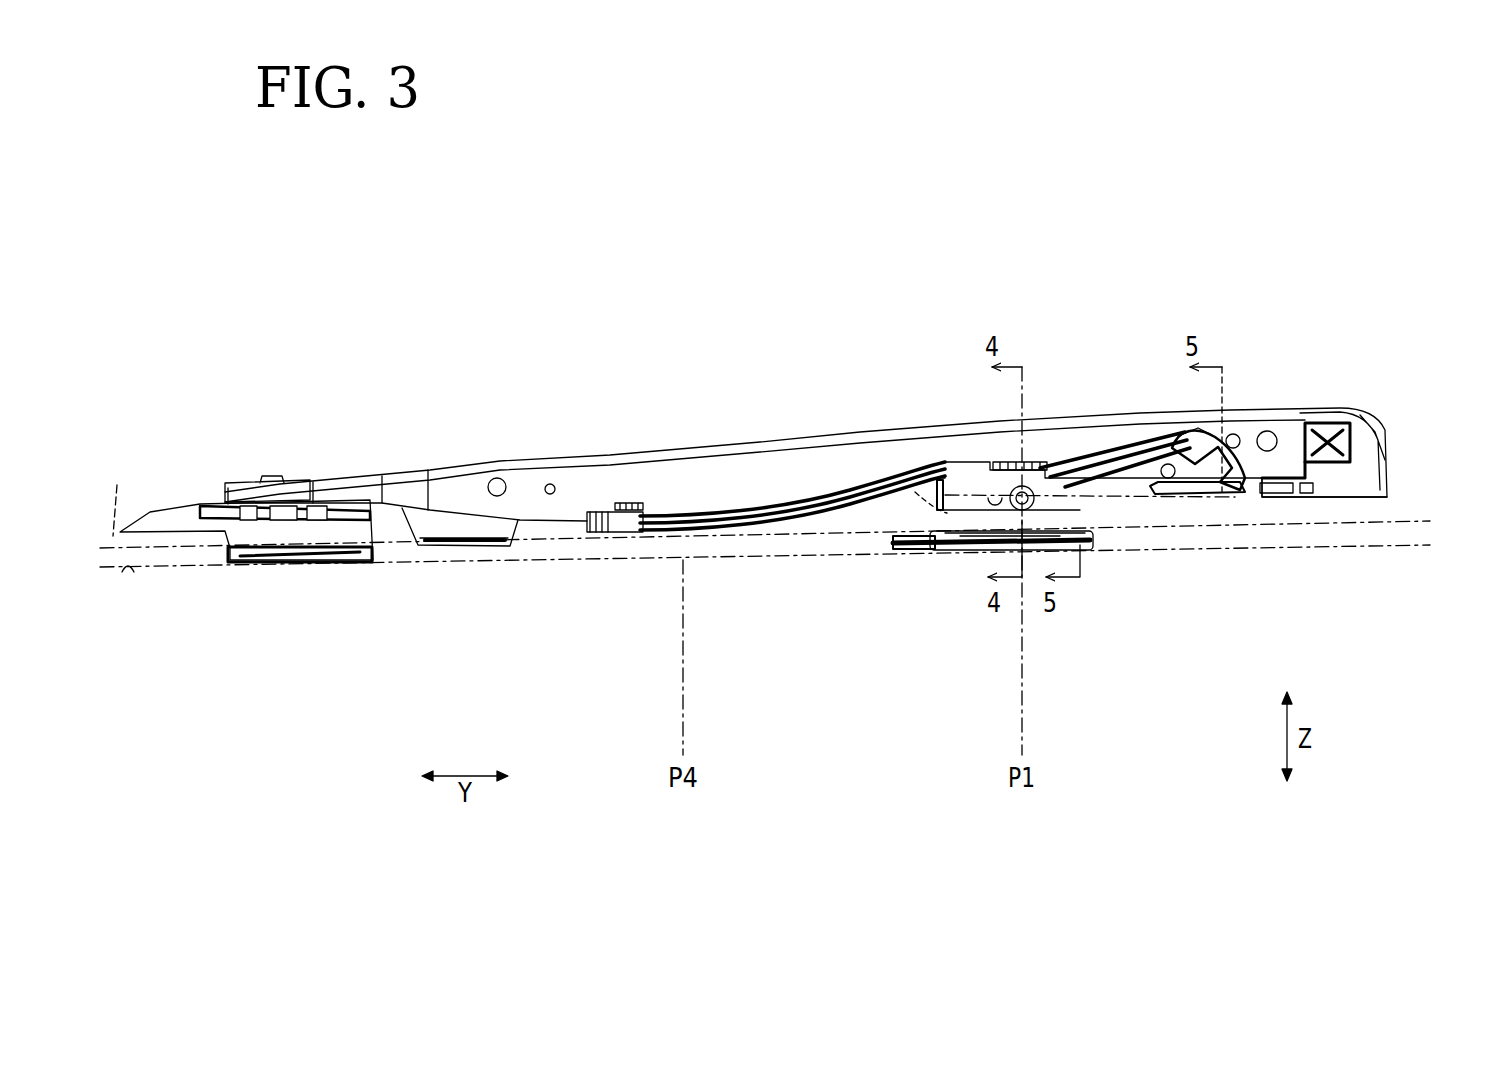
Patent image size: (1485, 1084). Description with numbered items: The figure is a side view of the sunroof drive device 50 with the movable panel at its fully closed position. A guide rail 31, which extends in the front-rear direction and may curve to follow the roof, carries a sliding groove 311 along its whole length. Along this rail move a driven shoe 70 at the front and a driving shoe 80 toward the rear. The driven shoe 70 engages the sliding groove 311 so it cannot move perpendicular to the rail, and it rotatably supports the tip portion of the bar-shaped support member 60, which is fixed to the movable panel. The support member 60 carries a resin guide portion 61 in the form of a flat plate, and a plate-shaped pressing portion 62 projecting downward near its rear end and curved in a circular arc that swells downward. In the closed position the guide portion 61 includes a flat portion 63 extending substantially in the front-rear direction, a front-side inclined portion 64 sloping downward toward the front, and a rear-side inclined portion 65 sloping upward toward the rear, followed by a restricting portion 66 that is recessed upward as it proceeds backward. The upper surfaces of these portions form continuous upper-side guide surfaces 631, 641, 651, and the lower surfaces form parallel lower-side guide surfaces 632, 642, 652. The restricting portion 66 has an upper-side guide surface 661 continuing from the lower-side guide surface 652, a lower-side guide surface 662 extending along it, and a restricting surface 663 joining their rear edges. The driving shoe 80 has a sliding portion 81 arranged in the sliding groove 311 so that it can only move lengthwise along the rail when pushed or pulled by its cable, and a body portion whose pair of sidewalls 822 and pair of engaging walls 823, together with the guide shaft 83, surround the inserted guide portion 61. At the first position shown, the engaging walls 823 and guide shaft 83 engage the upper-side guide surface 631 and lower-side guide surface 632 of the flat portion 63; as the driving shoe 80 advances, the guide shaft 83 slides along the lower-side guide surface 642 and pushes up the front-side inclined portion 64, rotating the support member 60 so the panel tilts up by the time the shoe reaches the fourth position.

The drive device 50 is at (200, 338).
The guide rail 31 is at (117, 496).
The sliding groove 311 is at (128, 578).
The support member 60 is at (455, 460).
The guide portion 61 is at (660, 510).
The pressing portion 62 is at (1240, 492).
The flat portion 63 is at (977, 473).
The upper-side guide surface 631 is at (975, 470).
The lower-side guide surface 632 is at (915, 470).
The front-side inclined portion 64 is at (792, 507).
The upper-side guide surface 641 is at (722, 510).
The lower-side guide surface 642 is at (752, 531).
The rear-side inclined portion 65 is at (1115, 497).
The upper-side guide surface 651 is at (1112, 440).
The lower-side guide surface 652 is at (1135, 480).
The restricting portion 66 is at (1242, 454).
The upper-side guide surface 661 is at (1165, 435).
The lower-side guide surface 662 is at (1162, 492).
The restricting surface 663 is at (1228, 437).
The driven shoe 70 is at (185, 503).
The driving shoe 80 is at (928, 553).
The sliding portion 81 is at (987, 548).
The sidewall 822 is at (960, 545).
The engaging wall 823 is at (1040, 468).
The guide shaft 83 is at (1040, 543).